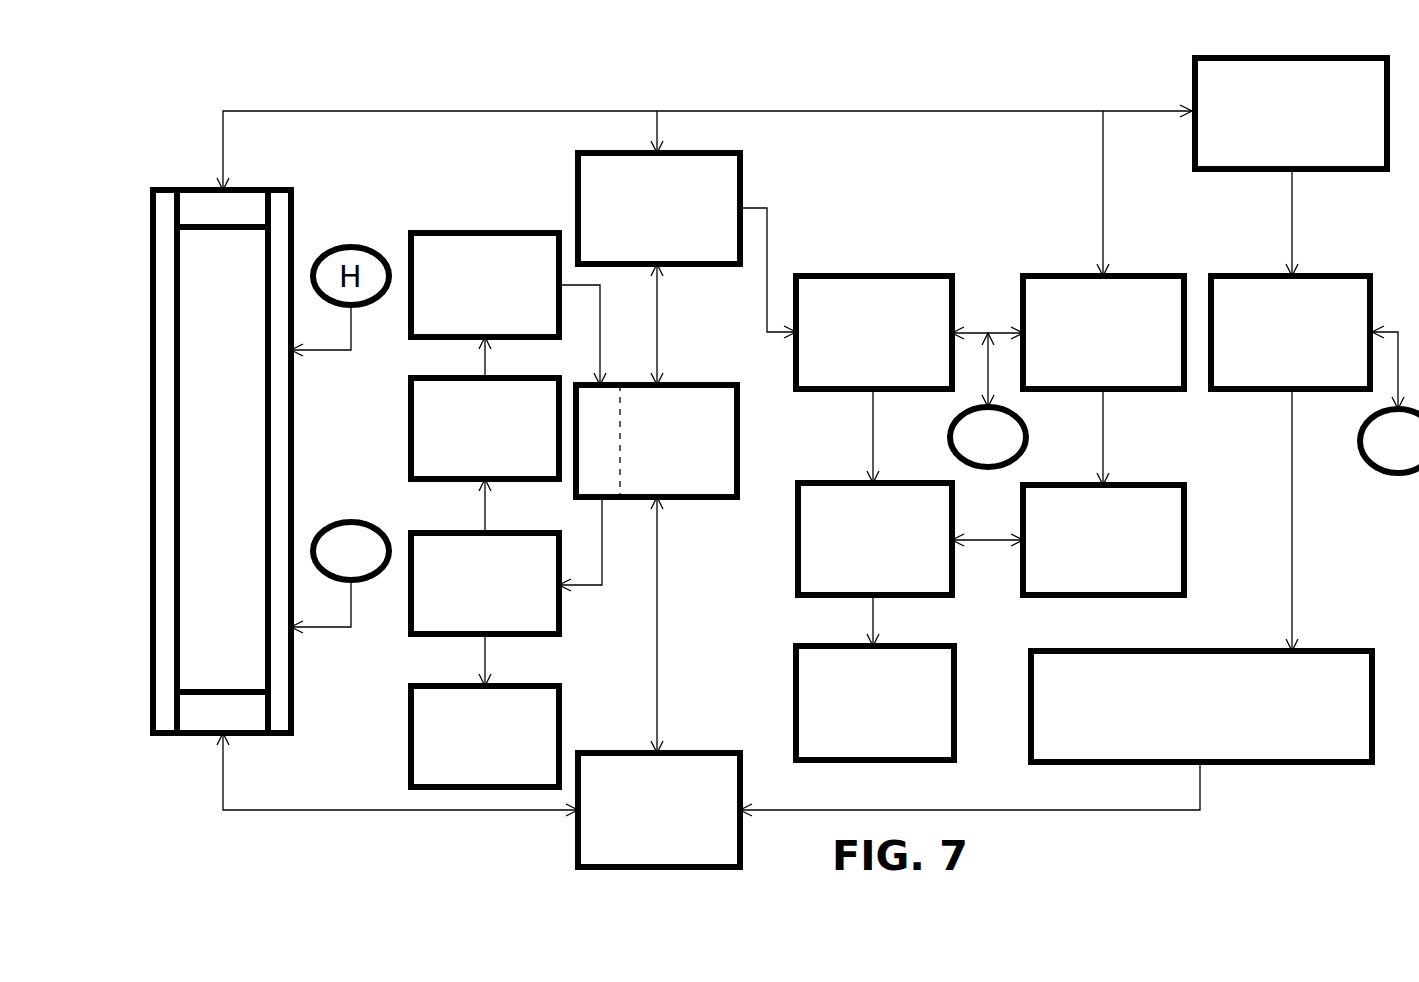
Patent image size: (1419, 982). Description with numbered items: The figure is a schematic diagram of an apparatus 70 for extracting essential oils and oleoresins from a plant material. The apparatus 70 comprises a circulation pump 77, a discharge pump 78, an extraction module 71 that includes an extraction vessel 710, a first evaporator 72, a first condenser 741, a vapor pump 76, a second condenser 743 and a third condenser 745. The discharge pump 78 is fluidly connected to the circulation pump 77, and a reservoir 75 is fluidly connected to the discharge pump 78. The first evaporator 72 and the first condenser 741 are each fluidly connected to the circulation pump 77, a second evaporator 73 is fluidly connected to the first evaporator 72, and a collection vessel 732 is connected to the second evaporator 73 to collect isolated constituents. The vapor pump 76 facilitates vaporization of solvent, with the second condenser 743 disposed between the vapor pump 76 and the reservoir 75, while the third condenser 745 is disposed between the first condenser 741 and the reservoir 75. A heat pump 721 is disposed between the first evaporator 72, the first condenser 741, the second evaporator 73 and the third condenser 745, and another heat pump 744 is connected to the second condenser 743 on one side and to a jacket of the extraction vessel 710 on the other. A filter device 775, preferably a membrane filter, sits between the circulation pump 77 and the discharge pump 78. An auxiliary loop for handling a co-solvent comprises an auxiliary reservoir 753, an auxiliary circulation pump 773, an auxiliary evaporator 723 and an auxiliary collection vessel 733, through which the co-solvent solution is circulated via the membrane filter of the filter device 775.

The apparatus 70 is at (152, 87).
The extraction module 71 is at (184, 188).
The extraction vessel 710 is at (150, 480).
The first evaporator 72 is at (873, 296).
The heat pump 721 is at (1003, 460).
The auxiliary evaporator 723 is at (448, 590).
The second evaporator 73 is at (840, 515).
The collection vessel 732 is at (838, 703).
The auxiliary collection vessel 733 is at (523, 735).
The first condenser 741 is at (1135, 297).
The second condenser 743 is at (1318, 297).
The heat pump 744 is at (1385, 458).
The third condenser 745 is at (1173, 562).
The reservoir 75 is at (1225, 735).
The auxiliary reservoir 753 is at (433, 413).
The vapor pump 76 is at (1205, 95).
The circulation pump 77 is at (595, 215).
The auxiliary circulation pump 773 is at (455, 262).
The filter device 775 is at (692, 420).
The discharge pump 78 is at (600, 820).